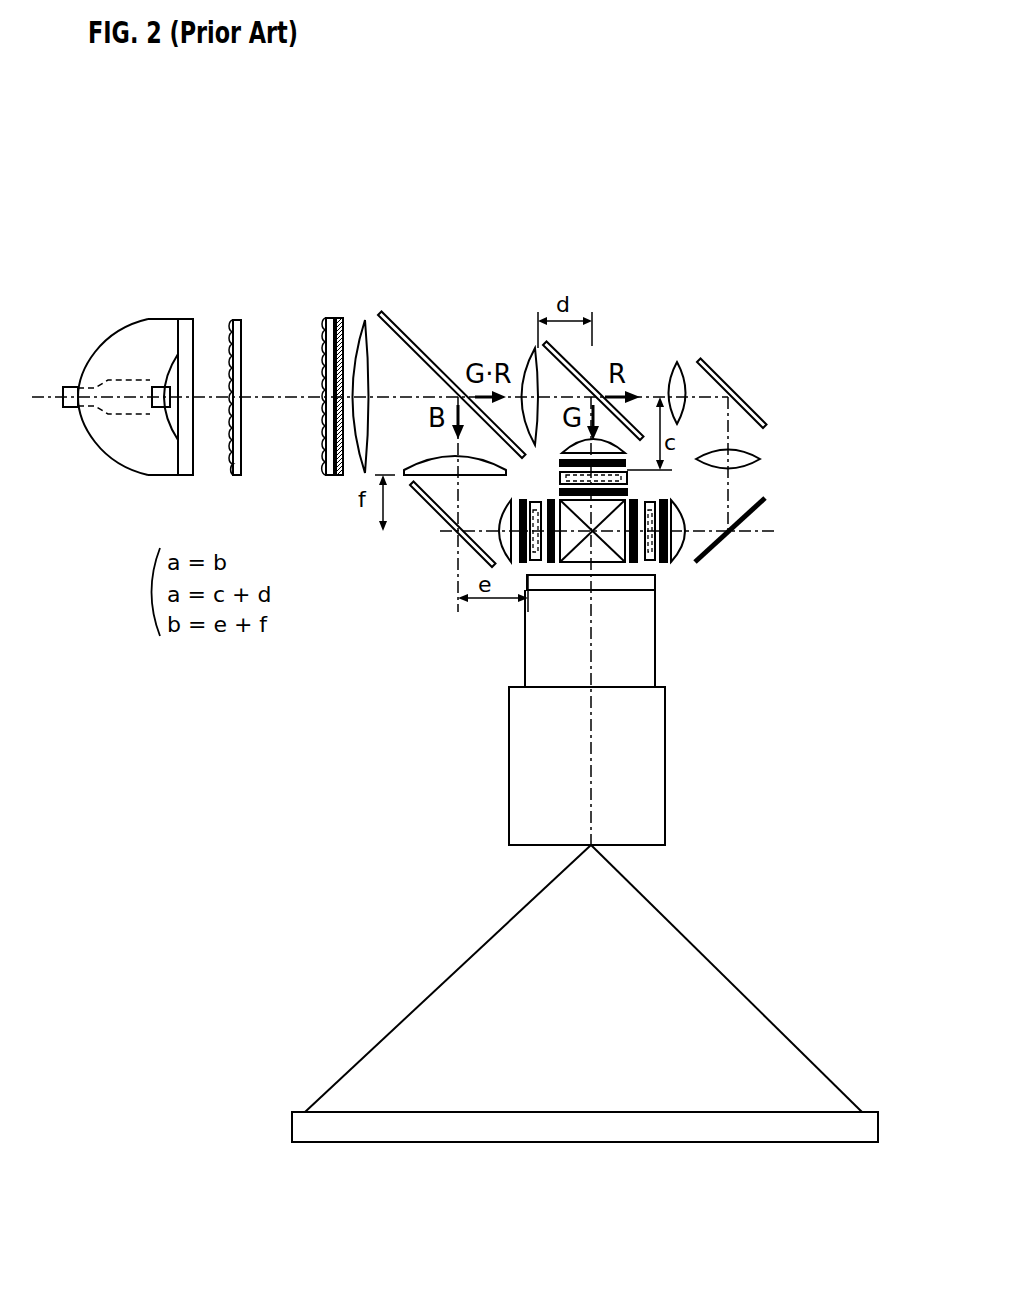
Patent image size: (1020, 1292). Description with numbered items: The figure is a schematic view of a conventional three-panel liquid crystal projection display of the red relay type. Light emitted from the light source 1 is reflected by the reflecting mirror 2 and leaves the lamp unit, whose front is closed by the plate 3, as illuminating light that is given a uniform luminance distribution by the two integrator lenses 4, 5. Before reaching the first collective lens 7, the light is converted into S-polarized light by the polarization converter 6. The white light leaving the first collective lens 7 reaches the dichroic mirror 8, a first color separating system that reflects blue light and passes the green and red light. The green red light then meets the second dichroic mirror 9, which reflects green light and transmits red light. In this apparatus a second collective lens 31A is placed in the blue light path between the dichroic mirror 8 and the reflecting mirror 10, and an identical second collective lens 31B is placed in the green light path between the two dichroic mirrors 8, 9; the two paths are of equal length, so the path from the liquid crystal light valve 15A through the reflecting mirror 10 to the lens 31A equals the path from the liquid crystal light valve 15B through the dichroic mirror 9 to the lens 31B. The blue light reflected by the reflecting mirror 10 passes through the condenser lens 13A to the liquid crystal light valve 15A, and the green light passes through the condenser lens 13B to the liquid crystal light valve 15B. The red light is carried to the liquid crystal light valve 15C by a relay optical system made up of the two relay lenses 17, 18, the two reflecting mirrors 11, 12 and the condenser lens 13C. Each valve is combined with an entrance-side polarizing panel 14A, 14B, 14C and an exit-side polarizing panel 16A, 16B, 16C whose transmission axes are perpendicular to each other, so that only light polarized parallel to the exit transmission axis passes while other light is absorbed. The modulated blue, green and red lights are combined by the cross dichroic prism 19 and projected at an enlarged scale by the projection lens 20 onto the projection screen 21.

The light source 1 is at (97, 410).
The reflecting mirror 2 is at (112, 332).
The front glass plate 3 is at (193, 458).
The integrator lens 4 is at (238, 323).
The integrator lens 5 is at (330, 322).
The polarization converter 6 is at (340, 320).
The first collective lens 7 is at (365, 323).
The dichroic mirror 8 is at (425, 362).
The second dichroic mirror 9 is at (592, 348).
The reflecting mirror 10 is at (430, 507).
The reflecting mirror 11 is at (722, 380).
The reflecting mirror 12 is at (760, 510).
The condenser lens 13A is at (502, 542).
The condenser lens 13B is at (613, 450).
The condenser lens 13C is at (677, 560).
The polarizing panel 14A is at (520, 560).
The polarizing panel 14B is at (627, 458).
The polarizing panel 14C is at (663, 563).
The liquid crystal light valve 15A is at (535, 560).
The liquid crystal light valve 15B is at (627, 477).
The liquid crystal light valve 15C is at (650, 563).
The polarizing panel 16A is at (553, 562).
The polarizing panel 16B is at (627, 491).
The polarizing panel 16C is at (635, 563).
The relay lens 17 is at (678, 363).
The relay lens 18 is at (760, 452).
The cross dichroic prism 19 is at (607, 562).
The projection lens 20 is at (645, 798).
The projection screen 21 is at (757, 1112).
The second collective lens 31A is at (410, 460).
The second collective lens 31B is at (538, 346).